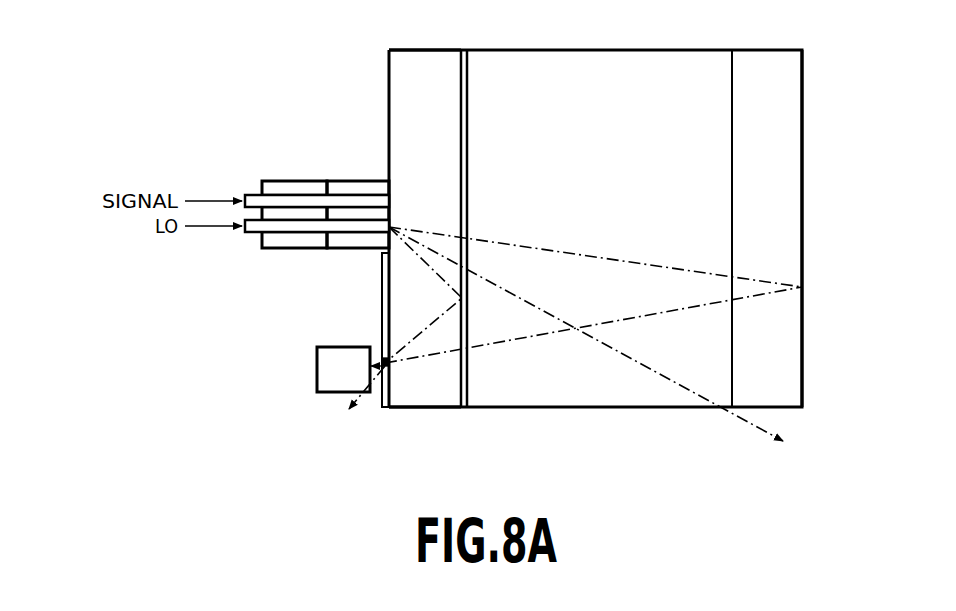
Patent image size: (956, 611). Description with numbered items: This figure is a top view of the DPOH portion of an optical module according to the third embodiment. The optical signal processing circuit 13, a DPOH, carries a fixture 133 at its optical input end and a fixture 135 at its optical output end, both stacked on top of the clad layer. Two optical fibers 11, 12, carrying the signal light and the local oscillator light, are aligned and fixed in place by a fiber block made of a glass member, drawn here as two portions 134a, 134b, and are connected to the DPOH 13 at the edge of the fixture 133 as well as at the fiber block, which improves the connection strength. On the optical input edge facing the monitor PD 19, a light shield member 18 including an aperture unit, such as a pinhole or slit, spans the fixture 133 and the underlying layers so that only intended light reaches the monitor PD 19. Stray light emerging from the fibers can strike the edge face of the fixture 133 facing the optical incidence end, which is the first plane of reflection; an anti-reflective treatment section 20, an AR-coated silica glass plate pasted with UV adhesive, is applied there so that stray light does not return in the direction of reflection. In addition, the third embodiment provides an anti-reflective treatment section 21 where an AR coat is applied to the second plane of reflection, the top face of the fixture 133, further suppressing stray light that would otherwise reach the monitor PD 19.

The optical fiber 11 is at (256, 194).
The optical fiber 12 is at (256, 234).
The optical signal processing circuit 13 is at (598, 50).
The light shield member 18 is at (385, 408).
The monitor PD 19 is at (345, 347).
The anti-reflective treatment section 20 is at (468, 383).
The anti-reflective treatment section 21 is at (425, 387).
The fixture 133 is at (427, 50).
The first coupler portion 134a is at (360, 181).
The second coupler portion 134b is at (300, 181).
The fixture 135 is at (768, 50).